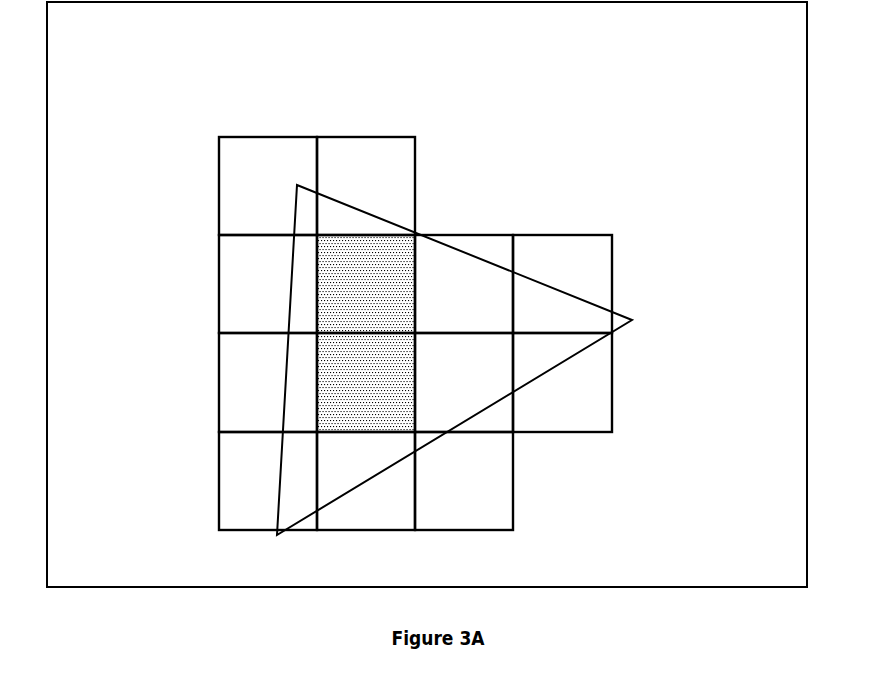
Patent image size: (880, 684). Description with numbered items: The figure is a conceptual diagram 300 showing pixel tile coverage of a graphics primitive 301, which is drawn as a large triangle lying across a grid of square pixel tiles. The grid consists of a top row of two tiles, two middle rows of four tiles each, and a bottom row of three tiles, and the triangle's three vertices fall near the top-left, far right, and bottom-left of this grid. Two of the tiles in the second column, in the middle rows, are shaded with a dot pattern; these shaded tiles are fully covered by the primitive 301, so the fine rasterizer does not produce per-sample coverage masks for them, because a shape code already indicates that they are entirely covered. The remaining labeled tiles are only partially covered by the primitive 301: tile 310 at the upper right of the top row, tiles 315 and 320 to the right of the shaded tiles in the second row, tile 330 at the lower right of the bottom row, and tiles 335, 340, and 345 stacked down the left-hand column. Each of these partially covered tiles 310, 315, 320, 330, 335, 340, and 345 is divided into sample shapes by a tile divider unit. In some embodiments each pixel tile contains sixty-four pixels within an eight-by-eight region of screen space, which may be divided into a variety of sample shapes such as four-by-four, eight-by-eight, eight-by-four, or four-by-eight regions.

The tile-based rendering scene / screen space 300 is at (98, 41).
The graphics primitive 301 is at (632, 318).
The tile 310 is at (392, 136).
The tile 315 is at (480, 233).
The tile 320 is at (593, 233).
The tile 330 is at (515, 515).
The tile 335 is at (218, 268).
The tile 340 is at (218, 366).
The tile 345 is at (218, 456).